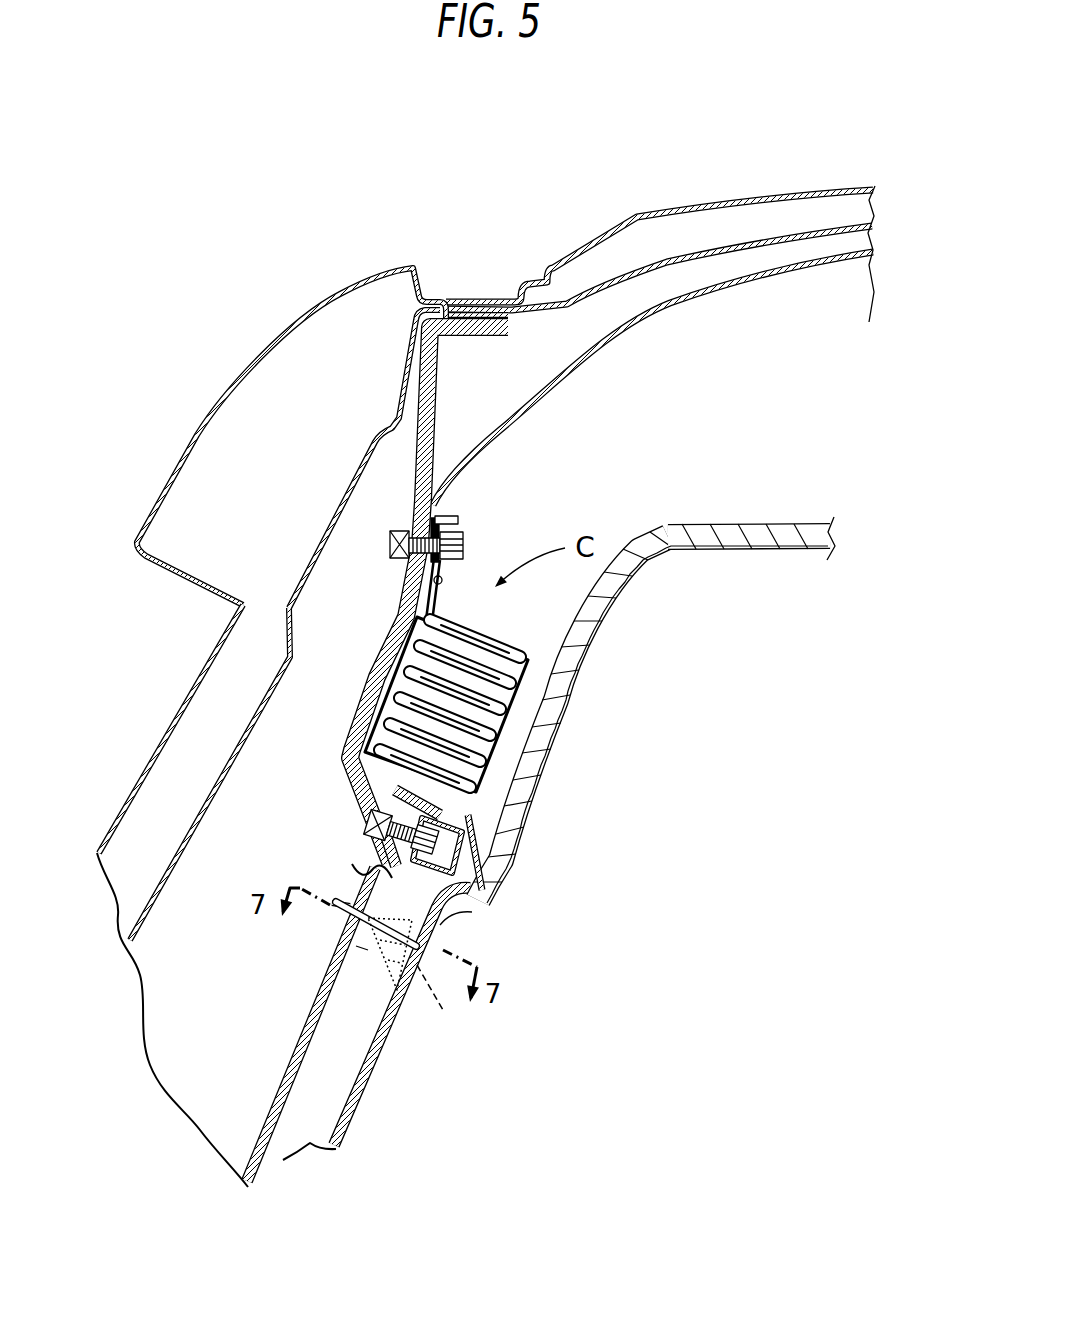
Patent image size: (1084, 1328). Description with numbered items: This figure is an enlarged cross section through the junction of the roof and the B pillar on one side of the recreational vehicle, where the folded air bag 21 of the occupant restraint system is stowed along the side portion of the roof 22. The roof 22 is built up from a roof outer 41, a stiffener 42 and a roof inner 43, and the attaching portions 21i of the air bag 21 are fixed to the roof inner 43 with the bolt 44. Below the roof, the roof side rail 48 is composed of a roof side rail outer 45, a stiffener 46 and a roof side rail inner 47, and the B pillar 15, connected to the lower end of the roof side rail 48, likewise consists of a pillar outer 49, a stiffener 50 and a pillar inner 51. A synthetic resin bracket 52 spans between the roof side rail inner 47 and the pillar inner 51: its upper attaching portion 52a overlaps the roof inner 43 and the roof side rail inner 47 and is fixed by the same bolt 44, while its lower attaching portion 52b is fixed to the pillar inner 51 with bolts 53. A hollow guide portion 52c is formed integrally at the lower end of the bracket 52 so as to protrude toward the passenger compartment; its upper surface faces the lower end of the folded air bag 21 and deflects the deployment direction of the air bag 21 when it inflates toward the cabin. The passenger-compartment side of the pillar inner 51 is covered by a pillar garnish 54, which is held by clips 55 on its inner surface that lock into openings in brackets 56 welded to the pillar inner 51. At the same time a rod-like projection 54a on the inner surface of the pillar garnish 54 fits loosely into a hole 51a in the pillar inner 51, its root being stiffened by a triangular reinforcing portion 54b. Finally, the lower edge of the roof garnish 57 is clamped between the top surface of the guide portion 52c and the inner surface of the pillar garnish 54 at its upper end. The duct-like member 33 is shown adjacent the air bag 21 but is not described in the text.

The B pillar 15 is at (192, 896).
The air bag 21 is at (515, 716).
The attaching portions 21i is at (408, 587).
The roof 22 is at (654, 293).
The duct 33 is at (537, 661).
The roof outer 41 is at (684, 203).
The stiffener 42 is at (658, 272).
The roof inner 43 is at (770, 277).
The bolt 44 is at (455, 552).
The roof side rail outer 45 is at (272, 352).
The stiffener 46 is at (327, 527).
The roof side rail inner 47 is at (387, 655).
The roof side rail 48 is at (291, 388).
The pillar outer 49 is at (133, 787).
The stiffener 50 is at (193, 820).
The pillar inner 51 is at (291, 1075).
The hole 51a is at (341, 905).
The synthetic resin bracket 52 is at (475, 822).
The attaching portion 52a is at (448, 518).
The attaching portion 52b is at (445, 905).
The guide portion 52c is at (440, 825).
The bolt 53 is at (494, 862).
The pillar garnish 54 is at (389, 1054).
The projection 54a is at (337, 906).
The reinforcing portion 54b is at (386, 955).
The clip 55 is at (435, 1000).
The bracket 56 is at (362, 948).
The roof garnish 57 is at (738, 538).